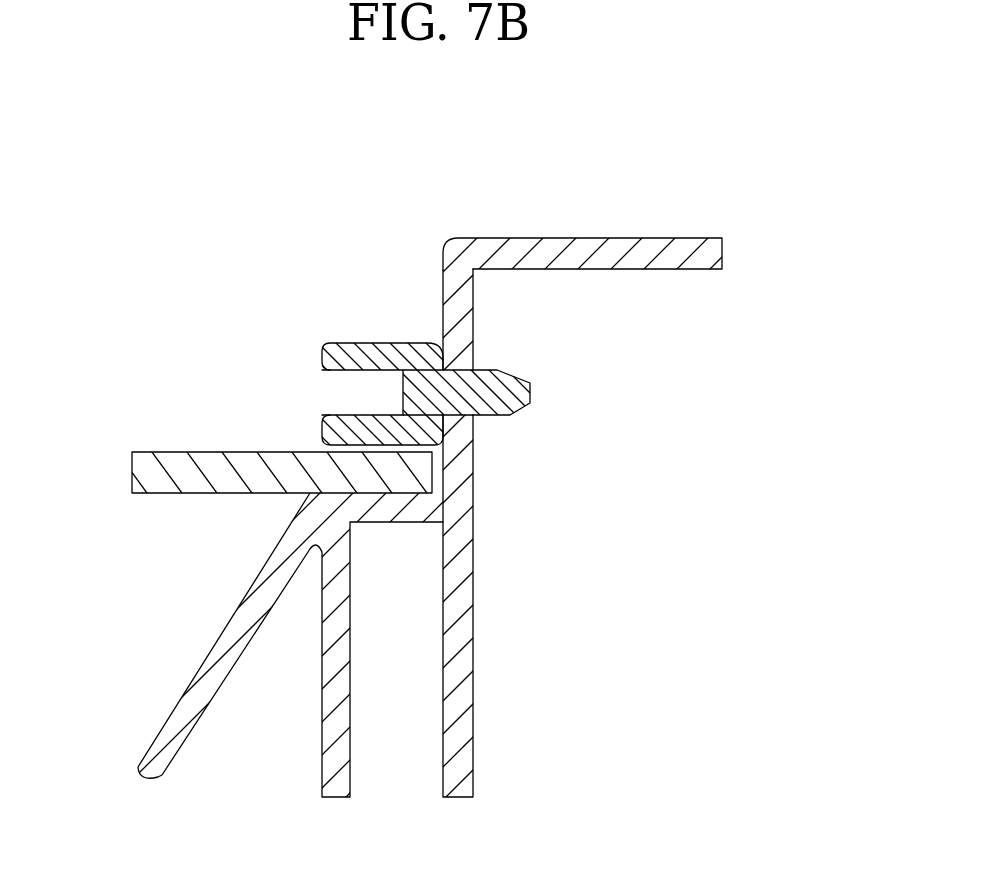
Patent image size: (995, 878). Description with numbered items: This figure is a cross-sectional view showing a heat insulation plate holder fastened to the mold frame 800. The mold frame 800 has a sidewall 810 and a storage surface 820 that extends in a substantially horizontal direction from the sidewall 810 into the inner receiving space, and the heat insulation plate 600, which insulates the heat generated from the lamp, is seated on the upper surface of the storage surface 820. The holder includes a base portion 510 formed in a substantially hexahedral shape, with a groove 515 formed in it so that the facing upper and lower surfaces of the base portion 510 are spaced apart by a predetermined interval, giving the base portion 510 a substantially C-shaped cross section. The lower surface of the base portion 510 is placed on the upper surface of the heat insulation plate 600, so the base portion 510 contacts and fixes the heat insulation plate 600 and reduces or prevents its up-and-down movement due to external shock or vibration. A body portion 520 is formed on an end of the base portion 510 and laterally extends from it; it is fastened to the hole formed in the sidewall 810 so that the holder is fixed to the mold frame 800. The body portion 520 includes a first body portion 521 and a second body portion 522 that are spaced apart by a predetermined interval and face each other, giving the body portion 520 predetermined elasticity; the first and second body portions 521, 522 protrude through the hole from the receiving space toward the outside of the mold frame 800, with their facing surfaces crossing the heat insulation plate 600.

The base portion 510 is at (357, 345).
The groove 515 is at (330, 398).
The body portion 520 is at (567, 543).
The first body portion 521 is at (426, 394).
The second body portion 522 is at (471, 422).
The heat insulation plate 600 is at (141, 470).
The mold frame 800 is at (727, 219).
The sidewall 810 is at (463, 474).
The storage surface 820 is at (403, 507).